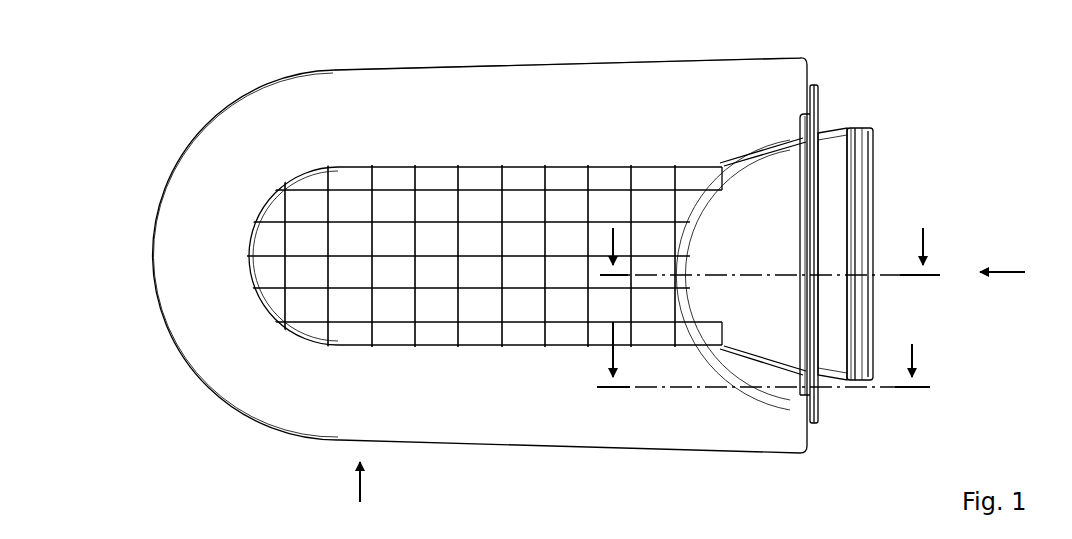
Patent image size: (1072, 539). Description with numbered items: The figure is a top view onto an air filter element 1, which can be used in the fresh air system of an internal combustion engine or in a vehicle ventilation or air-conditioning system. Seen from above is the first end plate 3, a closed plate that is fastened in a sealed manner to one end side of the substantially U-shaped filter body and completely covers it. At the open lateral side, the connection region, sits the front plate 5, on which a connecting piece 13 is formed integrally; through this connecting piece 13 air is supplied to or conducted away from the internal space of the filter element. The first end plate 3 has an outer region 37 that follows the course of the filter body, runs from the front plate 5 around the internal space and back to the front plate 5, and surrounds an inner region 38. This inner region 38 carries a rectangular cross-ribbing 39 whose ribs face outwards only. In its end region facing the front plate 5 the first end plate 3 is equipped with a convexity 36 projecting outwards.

The air filter element 1 is at (176, 112).
The first end plate 3 is at (148, 254).
The front plate 5 is at (824, 93).
The connecting piece 13 is at (873, 158).
The convexity 36 is at (760, 250).
The outer region 37 is at (434, 100).
The inner region 38 is at (437, 200).
The ribbing 39 is at (587, 210).